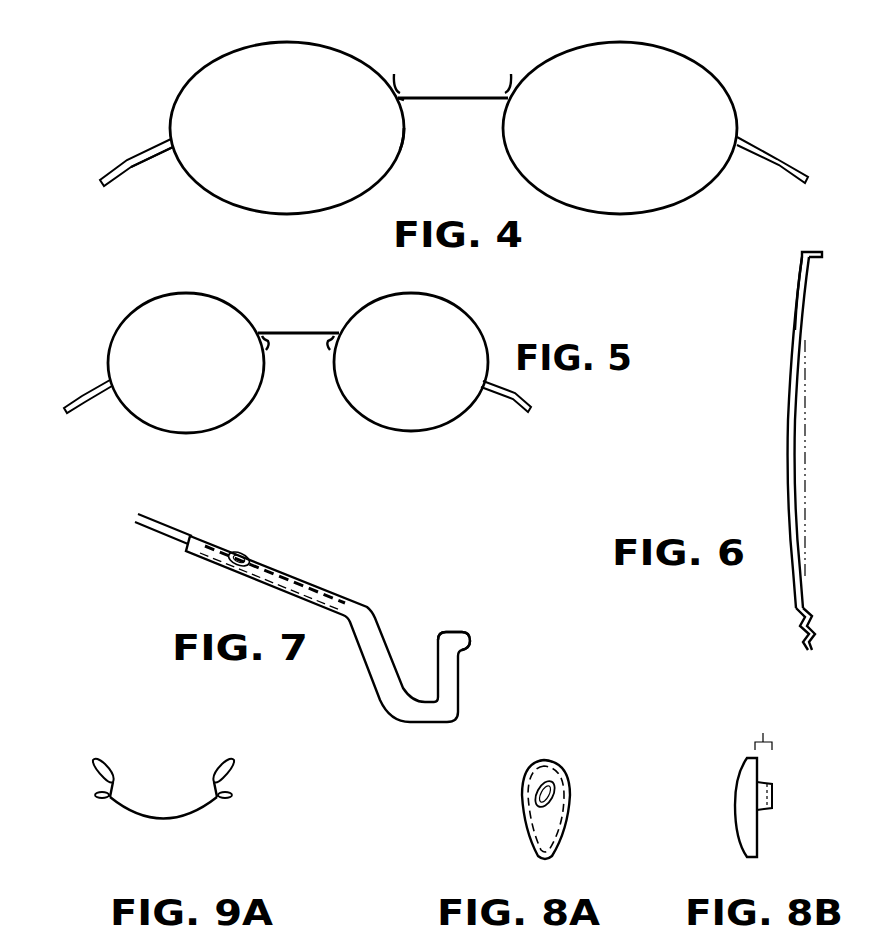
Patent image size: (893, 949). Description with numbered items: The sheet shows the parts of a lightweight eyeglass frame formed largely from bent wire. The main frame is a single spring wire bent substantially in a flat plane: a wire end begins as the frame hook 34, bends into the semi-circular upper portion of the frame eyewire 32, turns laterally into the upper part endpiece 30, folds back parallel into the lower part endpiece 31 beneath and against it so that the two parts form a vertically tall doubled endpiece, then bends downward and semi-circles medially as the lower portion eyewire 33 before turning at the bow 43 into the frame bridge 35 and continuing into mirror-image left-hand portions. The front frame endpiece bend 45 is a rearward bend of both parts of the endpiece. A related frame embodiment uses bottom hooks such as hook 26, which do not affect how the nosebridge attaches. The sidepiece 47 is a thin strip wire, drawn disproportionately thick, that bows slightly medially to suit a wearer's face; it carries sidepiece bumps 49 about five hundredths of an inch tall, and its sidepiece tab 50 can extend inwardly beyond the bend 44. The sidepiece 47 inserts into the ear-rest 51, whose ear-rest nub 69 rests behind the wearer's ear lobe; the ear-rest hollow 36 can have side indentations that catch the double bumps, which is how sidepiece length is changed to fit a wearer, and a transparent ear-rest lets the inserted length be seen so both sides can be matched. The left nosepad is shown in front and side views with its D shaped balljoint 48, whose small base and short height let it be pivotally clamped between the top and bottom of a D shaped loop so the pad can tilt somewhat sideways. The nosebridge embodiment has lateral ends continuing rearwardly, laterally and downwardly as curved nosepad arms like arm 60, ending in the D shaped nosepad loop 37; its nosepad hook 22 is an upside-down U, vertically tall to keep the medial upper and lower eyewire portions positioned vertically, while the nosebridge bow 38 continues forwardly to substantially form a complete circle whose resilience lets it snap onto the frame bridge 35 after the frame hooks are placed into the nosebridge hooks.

In FIG. 9A, the nosepad hook 22 is at (105, 802).
In FIG. 5, the bottom frame hook 26 is at (270, 353).
In FIG. 4, the upper part endpiece 30 is at (137, 150).
In FIG. 4, the lower part endpiece 31 is at (148, 160).
In FIG. 4, the upper portion of frame eyewire 32 is at (195, 63).
In FIG. 4, the lower portion eyewire 33 is at (403, 158).
In FIG. 4, the frame hook 34 is at (392, 70).
In FIG. 4, the frame bridge 35 is at (465, 88).
In FIG. 7, the ear-rest hollow 36 is at (287, 582).
In FIG. 9A, the nosepad loop 37 is at (103, 758).
In FIG. 9A, the nosebridge bow 38 is at (165, 820).
In FIG. 4, the bow 43 is at (398, 98).
In FIG. 6, the bend 44 is at (802, 258).
In FIG. 4, the front frame endpiece bend 45 is at (122, 158).
In FIG. 6, the sidepiece 47 is at (773, 463).
In FIG. 7, the sidepiece 47 is at (135, 517).
In FIG. 8A, the balljoint 48 is at (556, 797).
In FIG. 8B, the balljoint 48 is at (768, 812).
In FIG. 6, the sidepiece bumps 49 is at (783, 625).
In FIG. 7, the sidepiece bumps 49 is at (240, 552).
In FIG. 6, the sidepiece tab 50 is at (822, 257).
In FIG. 7, the ear-rest 51 is at (390, 563).
In FIG. 9A, the nosepad arm 60 is at (118, 785).
In FIG. 7, the ear-rest nub 69 is at (447, 632).